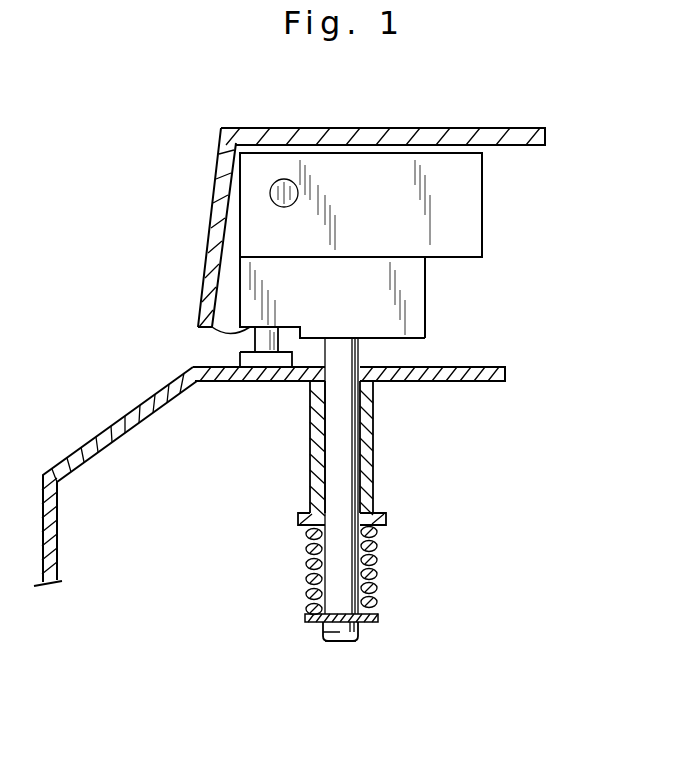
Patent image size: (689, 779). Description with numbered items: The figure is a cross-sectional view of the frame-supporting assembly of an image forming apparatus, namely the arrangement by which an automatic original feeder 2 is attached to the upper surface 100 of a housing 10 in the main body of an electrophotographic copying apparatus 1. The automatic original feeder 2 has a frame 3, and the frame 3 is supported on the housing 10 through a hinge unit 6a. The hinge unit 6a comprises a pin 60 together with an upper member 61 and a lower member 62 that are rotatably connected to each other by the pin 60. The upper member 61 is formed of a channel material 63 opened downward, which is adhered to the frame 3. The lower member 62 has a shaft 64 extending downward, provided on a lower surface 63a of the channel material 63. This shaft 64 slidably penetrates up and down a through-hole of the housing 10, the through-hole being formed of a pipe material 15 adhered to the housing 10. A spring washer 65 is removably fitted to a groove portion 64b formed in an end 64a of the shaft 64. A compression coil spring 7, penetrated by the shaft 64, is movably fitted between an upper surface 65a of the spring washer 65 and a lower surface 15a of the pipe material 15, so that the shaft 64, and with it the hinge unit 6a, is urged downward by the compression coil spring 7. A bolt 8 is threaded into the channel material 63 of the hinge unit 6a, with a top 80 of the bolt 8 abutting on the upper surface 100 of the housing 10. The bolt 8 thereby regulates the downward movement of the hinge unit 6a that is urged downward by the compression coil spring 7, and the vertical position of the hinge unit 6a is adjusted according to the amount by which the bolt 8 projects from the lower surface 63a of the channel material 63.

The electrophotographic copying apparatus 1 is at (100, 428).
The automatic original feeder 2 is at (313, 118).
The frame 3 is at (404, 124).
The hinge unit 6a is at (486, 206).
The compression coil spring 7 is at (377, 570).
The bolt 8 is at (234, 357).
The housing 10 is at (508, 386).
The pipe material 15 is at (374, 487).
The lower surface of the pipe material 15a is at (303, 527).
The pin 60 is at (280, 180).
The upper member 61 is at (455, 180).
The lower member 62 is at (428, 288).
The channel material 63 is at (408, 320).
The lower surface of the channel material 63a is at (213, 310).
The shaft 64 is at (345, 435).
The end of the shaft 64a is at (331, 633).
The groove portion 64b is at (322, 632).
The spring washer 65 is at (373, 622).
The upper surface of the spring washer 65a is at (372, 608).
The top of the bolt 80 is at (258, 383).
The upper surface of the housing 100 is at (490, 346).